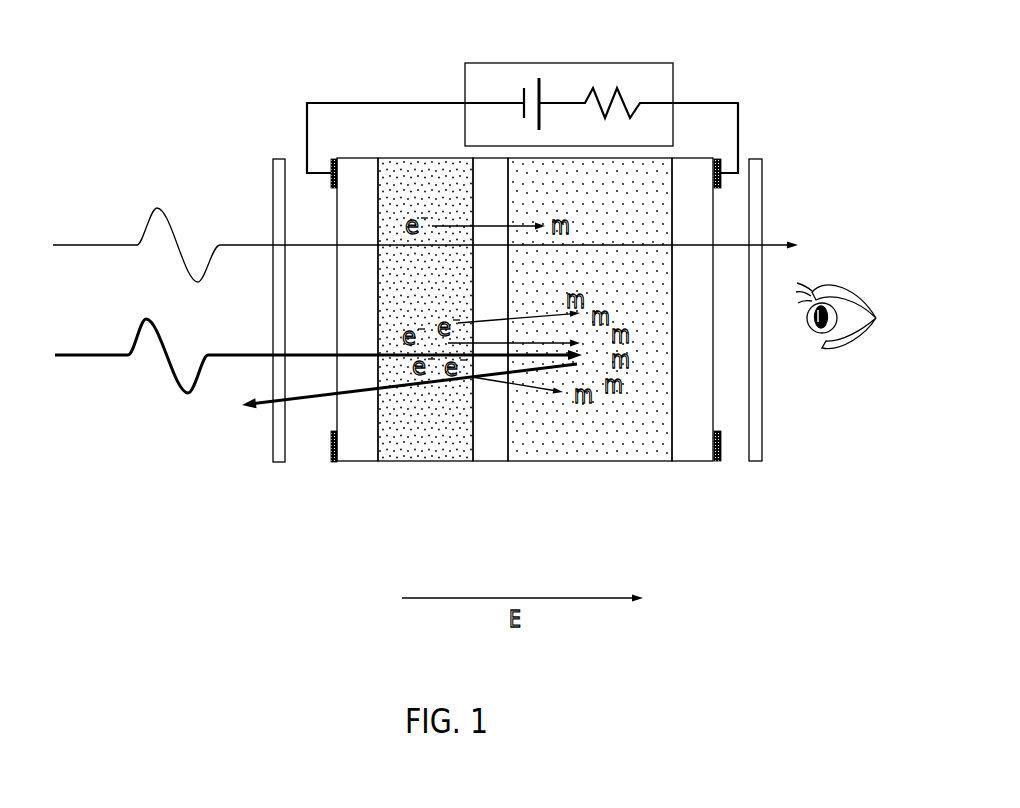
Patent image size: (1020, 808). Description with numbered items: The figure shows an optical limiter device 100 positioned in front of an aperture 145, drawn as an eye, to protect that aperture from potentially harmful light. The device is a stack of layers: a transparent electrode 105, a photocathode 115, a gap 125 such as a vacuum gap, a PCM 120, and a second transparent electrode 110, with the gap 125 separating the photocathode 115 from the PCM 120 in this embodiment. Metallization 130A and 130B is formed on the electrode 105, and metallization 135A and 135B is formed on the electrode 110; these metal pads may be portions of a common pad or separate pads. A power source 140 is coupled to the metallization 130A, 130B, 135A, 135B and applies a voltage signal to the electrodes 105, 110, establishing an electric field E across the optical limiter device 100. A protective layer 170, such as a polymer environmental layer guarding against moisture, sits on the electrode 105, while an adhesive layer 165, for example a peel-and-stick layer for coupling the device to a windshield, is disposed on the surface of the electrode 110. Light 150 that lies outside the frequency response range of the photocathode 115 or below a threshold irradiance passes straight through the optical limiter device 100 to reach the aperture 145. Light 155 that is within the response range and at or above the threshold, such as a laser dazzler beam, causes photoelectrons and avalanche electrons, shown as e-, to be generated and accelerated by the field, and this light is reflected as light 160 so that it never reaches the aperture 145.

The optical limiter device 100 is at (772, 532).
The electrode 105 is at (366, 464).
The electrode 110 is at (677, 464).
The photocathode 115 is at (424, 464).
The PCM 120 is at (580, 464).
The gap 125 is at (486, 464).
The metallization 130A is at (334, 158).
The metallization 130B is at (334, 464).
The metallization 135A is at (718, 159).
The metallization 135B is at (715, 464).
The power source 140 is at (649, 63).
The aperture 145 is at (846, 290).
The light 150 is at (84, 245).
The light 155 is at (78, 355).
The light 160 is at (262, 407).
The adhesive layer 165 is at (757, 464).
The protective layer 170 is at (275, 464).